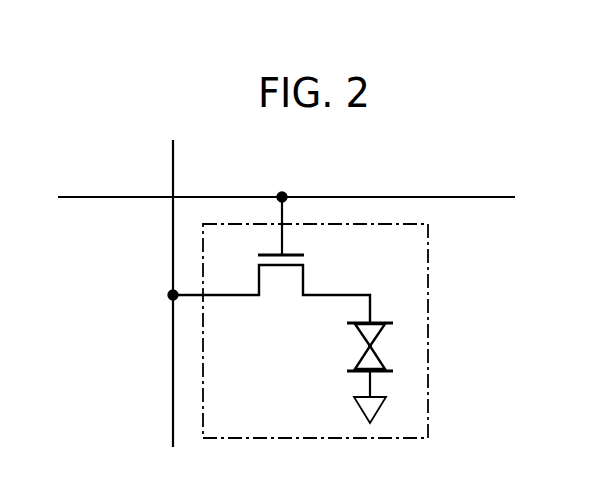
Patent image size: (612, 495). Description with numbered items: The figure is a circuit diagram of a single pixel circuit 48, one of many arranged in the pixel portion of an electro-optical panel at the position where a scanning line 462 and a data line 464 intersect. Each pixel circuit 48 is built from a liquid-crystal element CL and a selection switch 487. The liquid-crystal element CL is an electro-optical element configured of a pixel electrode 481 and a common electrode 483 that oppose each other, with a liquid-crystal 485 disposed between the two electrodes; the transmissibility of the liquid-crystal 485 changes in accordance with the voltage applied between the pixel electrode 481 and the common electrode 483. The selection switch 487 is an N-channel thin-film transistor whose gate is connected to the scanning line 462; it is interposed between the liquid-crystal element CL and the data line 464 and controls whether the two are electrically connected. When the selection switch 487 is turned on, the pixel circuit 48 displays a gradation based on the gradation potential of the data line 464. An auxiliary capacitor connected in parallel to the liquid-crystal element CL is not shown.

The scanning line 462 is at (90, 197).
The data line 464 is at (173, 355).
The pixel circuit 48 is at (428, 244).
The selection switch 487 is at (283, 266).
The pixel electrode 481 is at (384, 319).
The liquid-crystal 485 is at (372, 345).
The common electrode 483 is at (386, 371).
The liquid-crystal element CL is at (512, 282).